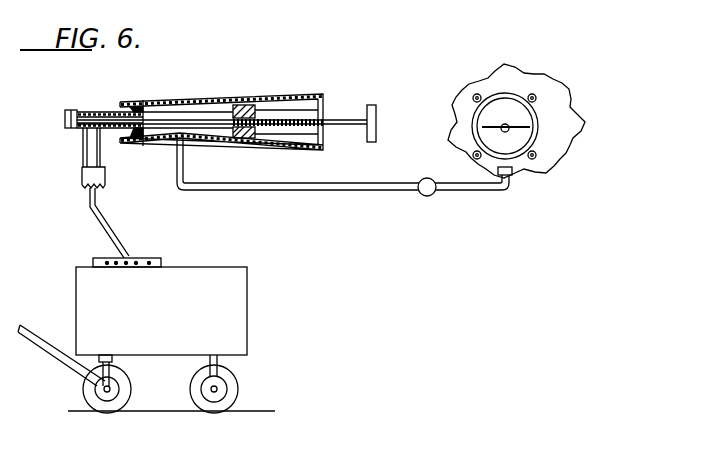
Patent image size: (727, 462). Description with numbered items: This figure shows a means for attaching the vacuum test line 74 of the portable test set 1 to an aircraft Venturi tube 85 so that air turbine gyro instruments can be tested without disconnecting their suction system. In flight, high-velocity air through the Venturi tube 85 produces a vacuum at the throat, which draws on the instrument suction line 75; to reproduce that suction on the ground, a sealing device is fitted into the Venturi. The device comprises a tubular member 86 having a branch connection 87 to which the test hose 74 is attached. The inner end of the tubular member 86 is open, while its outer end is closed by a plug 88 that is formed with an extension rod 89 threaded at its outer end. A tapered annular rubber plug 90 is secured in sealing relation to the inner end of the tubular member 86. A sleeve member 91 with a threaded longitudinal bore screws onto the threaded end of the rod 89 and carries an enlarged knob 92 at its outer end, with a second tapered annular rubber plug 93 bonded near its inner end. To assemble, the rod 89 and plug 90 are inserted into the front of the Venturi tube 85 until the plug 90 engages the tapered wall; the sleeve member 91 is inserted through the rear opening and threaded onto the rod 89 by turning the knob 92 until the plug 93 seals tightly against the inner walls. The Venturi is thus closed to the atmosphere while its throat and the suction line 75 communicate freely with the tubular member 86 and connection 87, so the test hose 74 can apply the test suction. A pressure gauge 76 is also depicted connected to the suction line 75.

The portable test set 1 is at (237, 314).
The vacuum test line 74 is at (97, 187).
The instrument suction line 75 is at (298, 187).
The pressure gauge 76 is at (533, 112).
The Venturi tube 85 is at (204, 102).
The tubular member 86 is at (108, 112).
The branch connection 87 is at (83, 143).
The plug 88 is at (65, 116).
The extension rod 89 is at (166, 115).
The tapered annular rubber plug 90 is at (130, 103).
The sleeve member 91 is at (334, 131).
The knob 92 is at (376, 138).
The tapered annular rubber plug 93 is at (258, 106).